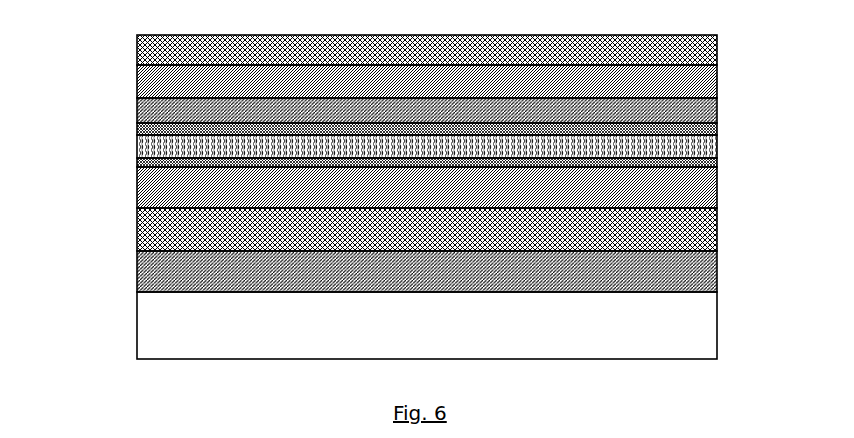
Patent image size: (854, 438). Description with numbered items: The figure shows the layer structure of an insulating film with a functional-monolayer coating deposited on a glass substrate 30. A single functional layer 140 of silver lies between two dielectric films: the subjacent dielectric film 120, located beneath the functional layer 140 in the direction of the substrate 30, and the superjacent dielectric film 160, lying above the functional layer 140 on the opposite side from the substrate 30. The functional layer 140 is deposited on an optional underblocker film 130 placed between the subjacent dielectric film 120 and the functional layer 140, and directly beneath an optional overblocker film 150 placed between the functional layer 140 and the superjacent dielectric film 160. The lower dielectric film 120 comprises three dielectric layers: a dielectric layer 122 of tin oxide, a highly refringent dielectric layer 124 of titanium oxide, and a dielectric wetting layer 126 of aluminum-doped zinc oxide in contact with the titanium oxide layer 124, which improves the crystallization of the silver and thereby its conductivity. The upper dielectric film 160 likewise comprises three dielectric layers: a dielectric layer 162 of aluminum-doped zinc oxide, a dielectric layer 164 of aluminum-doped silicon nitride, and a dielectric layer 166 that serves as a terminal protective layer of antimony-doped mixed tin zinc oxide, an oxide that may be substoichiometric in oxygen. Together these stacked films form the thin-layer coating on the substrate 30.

The dielectric layer 166 is at (152, 42).
The dielectric layer 164 is at (152, 73).
The dielectric layer 162 is at (153, 105).
The superjacent dielectric film 160 is at (728, 35).
The overblocker film 150 is at (163, 132).
The functional layer 140 is at (706, 152).
The underblocker film 130 is at (153, 163).
The dielectric wetting layer 126 is at (153, 193).
The highly refringent dielectric layer 124 is at (153, 229).
The dielectric layer 122 is at (153, 270).
The subjacent dielectric film 120 is at (728, 168).
The glass substrate 30 is at (427, 325).